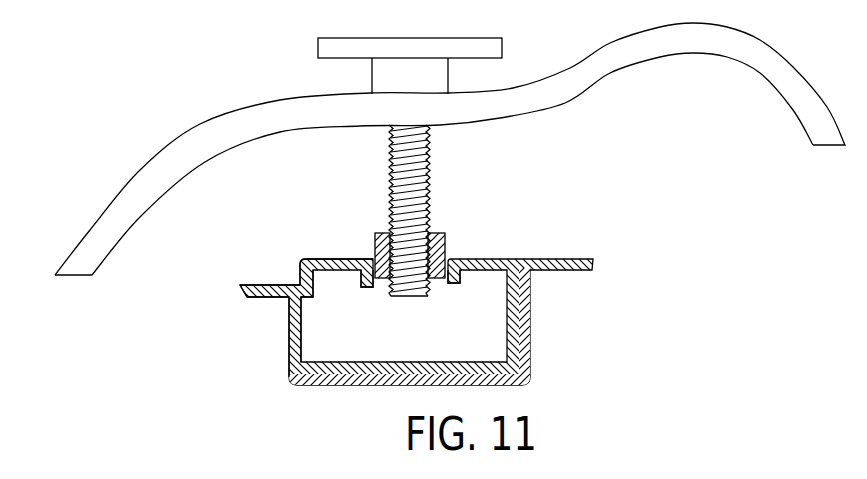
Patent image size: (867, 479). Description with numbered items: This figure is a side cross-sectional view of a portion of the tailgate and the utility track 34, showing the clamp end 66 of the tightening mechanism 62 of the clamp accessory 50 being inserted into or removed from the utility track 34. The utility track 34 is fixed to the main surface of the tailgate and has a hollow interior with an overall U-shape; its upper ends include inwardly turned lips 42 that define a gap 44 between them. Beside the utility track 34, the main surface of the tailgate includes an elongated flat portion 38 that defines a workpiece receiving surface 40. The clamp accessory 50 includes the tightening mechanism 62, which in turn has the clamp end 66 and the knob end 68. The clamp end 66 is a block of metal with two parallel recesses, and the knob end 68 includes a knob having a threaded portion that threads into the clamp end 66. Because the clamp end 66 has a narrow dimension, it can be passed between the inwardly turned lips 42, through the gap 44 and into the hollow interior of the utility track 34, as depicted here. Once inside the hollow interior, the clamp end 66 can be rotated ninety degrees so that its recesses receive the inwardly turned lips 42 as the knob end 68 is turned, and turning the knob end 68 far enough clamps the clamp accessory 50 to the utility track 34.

The utility track 34 is at (478, 258).
The elongated flat portion 38 is at (247, 298).
The workpiece receiving surface 40 is at (263, 285).
The inwardly turned lips 42 is at (365, 288).
The gap 44 is at (446, 277).
The clamp accessory 50 is at (158, 138).
The tightening mechanism 62 is at (364, 74).
The clamp end 66 is at (446, 239).
The knob end 68 is at (478, 48).